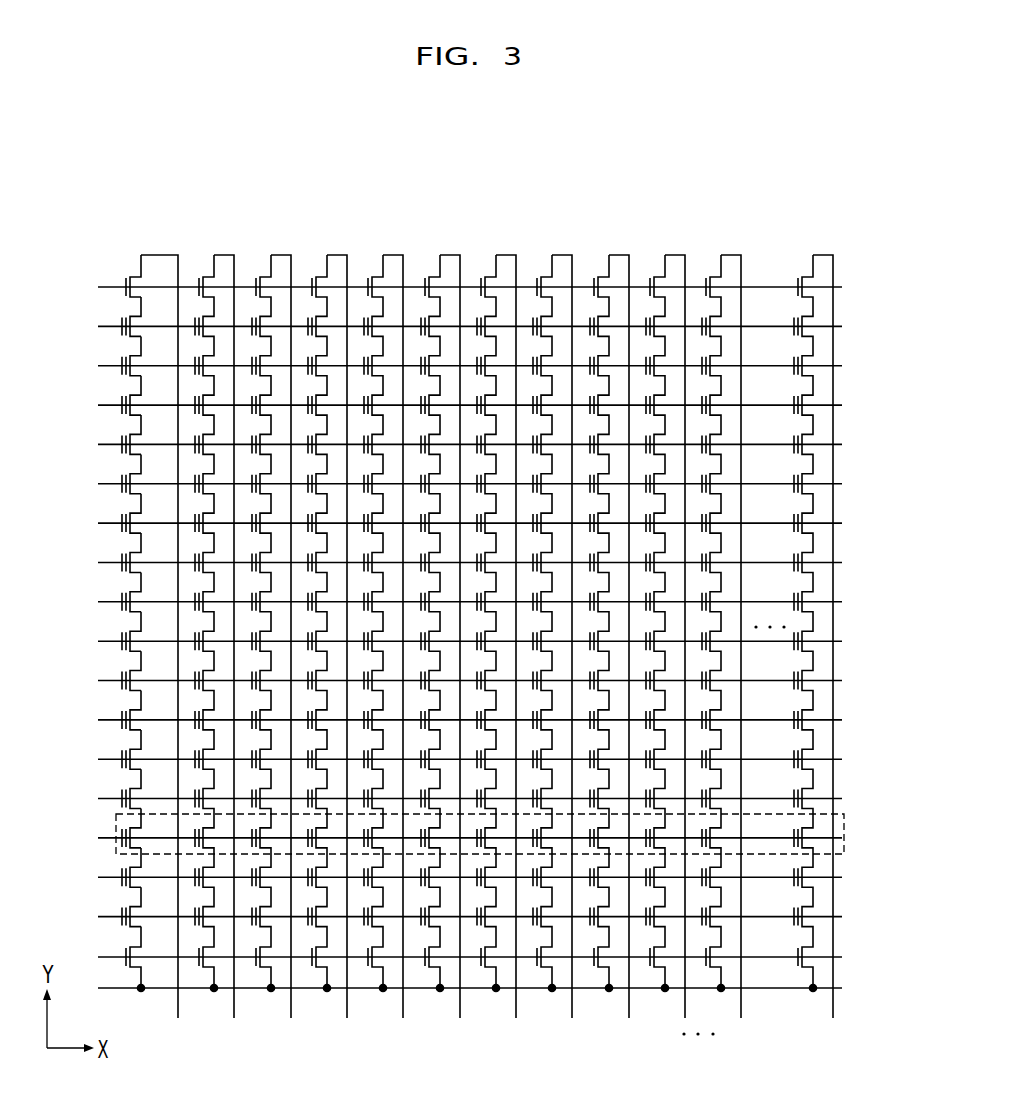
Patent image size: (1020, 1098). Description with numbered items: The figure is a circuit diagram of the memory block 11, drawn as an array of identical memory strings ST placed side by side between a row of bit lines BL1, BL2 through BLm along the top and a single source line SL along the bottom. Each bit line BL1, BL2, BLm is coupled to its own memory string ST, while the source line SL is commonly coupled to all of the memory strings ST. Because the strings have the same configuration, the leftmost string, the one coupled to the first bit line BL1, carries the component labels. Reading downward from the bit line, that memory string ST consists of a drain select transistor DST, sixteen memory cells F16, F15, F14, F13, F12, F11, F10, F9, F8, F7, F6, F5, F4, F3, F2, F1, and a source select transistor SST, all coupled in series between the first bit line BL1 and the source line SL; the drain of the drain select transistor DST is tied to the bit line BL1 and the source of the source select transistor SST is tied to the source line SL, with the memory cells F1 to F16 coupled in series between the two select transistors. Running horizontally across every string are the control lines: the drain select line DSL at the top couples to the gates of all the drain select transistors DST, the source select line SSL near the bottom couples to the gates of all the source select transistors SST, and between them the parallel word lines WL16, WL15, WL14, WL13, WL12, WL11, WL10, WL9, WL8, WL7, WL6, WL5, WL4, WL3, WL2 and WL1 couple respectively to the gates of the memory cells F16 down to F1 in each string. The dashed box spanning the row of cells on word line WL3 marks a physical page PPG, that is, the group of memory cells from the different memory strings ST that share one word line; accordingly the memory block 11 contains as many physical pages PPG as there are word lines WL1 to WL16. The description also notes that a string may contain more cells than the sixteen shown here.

The memory block 11 is at (766, 222).
The memory string ST is at (180, 238).
The drain select transistor DST is at (149, 276).
The source select transistor SST is at (149, 957).
The memory cell F1 is at (145, 906).
The memory cell F2 is at (145, 867).
The memory cell F3 is at (145, 828).
The memory cell F4 is at (145, 788).
The memory cell F5 is at (145, 749).
The memory cell F6 is at (145, 710).
The memory cell F7 is at (145, 670).
The memory cell F8 is at (145, 631).
The memory cell F9 is at (145, 592).
The memory cell F10 is at (147, 552).
The memory cell F11 is at (147, 513).
The memory cell F12 is at (147, 473).
The memory cell F13 is at (147, 434).
The memory cell F14 is at (147, 395).
The memory cell F15 is at (147, 355).
The memory cell F16 is at (147, 316).
The drain select line DSL is at (454, 287).
The source select line SSL is at (454, 957).
The source line SL is at (458, 988).
The word line WL1 is at (454, 917).
The word line WL2 is at (454, 877).
The word line WL3 is at (454, 838).
The word line WL4 is at (454, 799).
The word line WL5 is at (454, 759).
The word line WL6 is at (454, 720).
The word line WL7 is at (454, 681).
The word line WL8 is at (454, 641).
The word line WL9 is at (454, 602).
The word line WL10 is at (450, 563).
The word line WL11 is at (450, 523).
The word line WL12 is at (450, 484).
The word line WL13 is at (450, 444).
The word line WL14 is at (450, 405).
The word line WL15 is at (450, 366).
The word line WL16 is at (450, 326).
The first bit line BL1 is at (166, 652).
The bit line BL2 is at (232, 652).
The bit line BLm is at (832, 652).
The physical page PPG is at (847, 830).